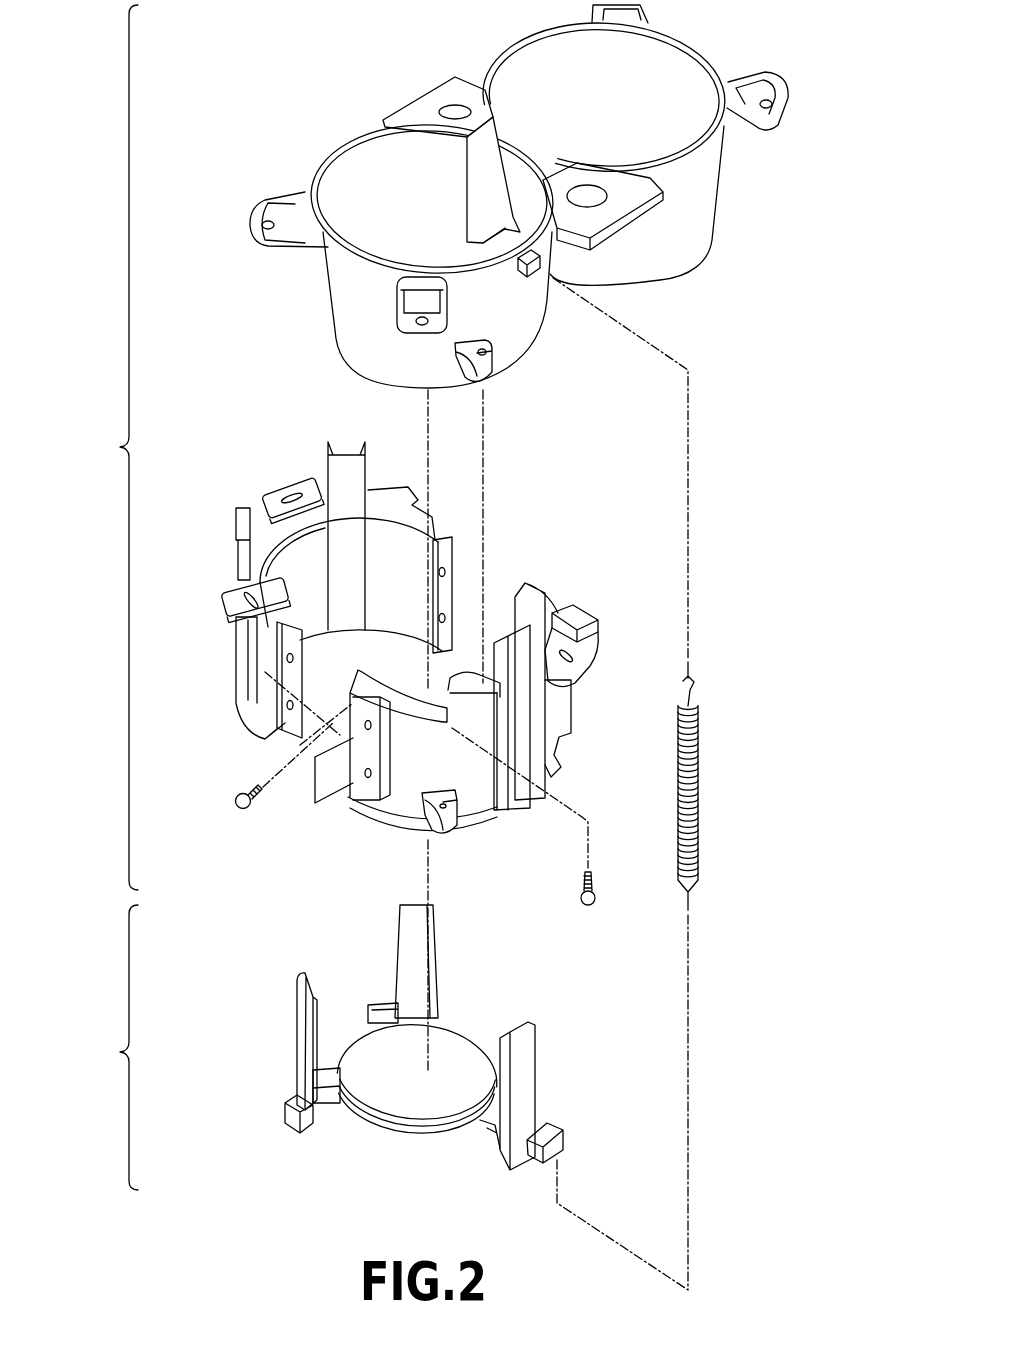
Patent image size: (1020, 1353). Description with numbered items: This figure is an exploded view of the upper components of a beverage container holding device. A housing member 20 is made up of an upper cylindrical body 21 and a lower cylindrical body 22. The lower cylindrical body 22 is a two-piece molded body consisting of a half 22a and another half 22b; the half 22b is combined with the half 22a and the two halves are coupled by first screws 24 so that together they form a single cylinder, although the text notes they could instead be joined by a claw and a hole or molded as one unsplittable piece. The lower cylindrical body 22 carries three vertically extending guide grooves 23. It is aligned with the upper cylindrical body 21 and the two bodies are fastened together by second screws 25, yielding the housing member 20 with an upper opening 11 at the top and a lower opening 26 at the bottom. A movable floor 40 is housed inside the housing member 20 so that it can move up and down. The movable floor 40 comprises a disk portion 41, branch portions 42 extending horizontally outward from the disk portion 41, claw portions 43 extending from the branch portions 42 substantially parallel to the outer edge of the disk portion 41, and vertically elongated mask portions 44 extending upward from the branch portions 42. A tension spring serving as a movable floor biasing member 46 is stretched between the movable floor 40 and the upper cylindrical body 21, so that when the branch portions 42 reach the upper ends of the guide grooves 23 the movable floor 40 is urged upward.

The upper opening 11 is at (425, 155).
The housing member 20 is at (109, 447).
The upper cylindrical body 21 is at (519, 196).
The lower cylindrical body 22 is at (222, 628).
The half 22a is at (468, 785).
The half 22b is at (258, 522).
The guide grooves 23 is at (248, 651).
The first screws 24 is at (240, 812).
The second screws 25 is at (588, 905).
The lower opening 26 is at (307, 727).
The movable floor 40 is at (109, 1047).
The disk portion 41 is at (418, 1110).
The branch portions 42 is at (330, 1100).
The claw portions 43 is at (302, 1130).
The mask portions 44 is at (523, 1073).
The movable floor biasing member 46 is at (700, 787).